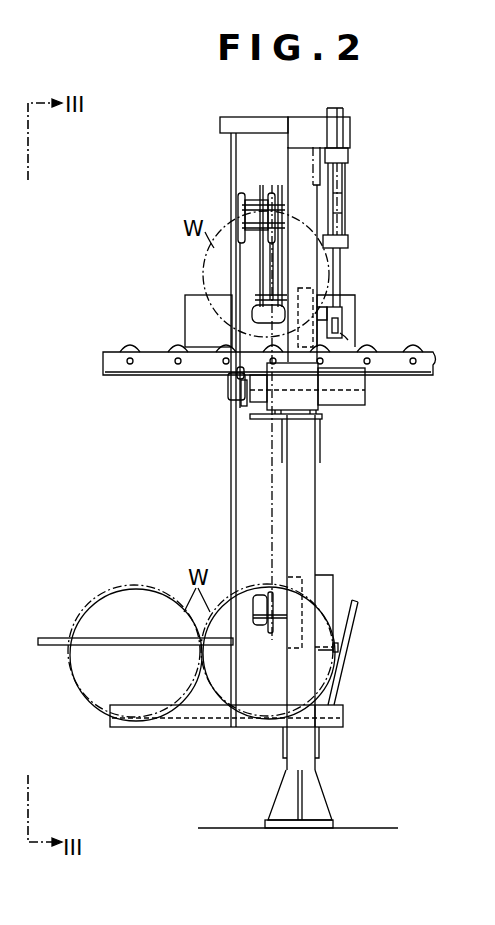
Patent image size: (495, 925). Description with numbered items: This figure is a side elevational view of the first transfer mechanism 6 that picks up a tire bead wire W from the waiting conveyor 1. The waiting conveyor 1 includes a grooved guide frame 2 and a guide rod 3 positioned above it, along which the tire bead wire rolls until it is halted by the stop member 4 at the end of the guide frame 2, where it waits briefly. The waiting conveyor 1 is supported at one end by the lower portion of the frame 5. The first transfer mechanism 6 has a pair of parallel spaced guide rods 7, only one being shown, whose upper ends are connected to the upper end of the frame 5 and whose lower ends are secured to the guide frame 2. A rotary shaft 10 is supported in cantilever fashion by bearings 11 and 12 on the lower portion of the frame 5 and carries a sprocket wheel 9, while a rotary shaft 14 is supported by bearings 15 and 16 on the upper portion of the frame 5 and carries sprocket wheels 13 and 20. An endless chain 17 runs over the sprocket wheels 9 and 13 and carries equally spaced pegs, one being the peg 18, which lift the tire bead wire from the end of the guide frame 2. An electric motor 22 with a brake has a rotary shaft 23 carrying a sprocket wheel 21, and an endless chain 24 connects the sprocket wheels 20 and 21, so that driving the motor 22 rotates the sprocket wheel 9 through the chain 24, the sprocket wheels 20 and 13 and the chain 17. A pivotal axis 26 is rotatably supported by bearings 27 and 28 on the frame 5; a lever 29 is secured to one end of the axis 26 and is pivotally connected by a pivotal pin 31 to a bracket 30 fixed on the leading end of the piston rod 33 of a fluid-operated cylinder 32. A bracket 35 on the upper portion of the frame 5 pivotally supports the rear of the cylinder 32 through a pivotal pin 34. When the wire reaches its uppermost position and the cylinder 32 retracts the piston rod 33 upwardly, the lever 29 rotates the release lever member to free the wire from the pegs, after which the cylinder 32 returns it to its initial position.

The waiting conveyor 1 is at (196, 720).
The grooved guide frame 2 is at (222, 716).
The guide rod 3 is at (58, 638).
The stop member 4 is at (338, 683).
The frame 5 is at (310, 518).
The first transfer mechanism 6 is at (224, 163).
The guide rods 7 is at (232, 138).
The sprocket wheel 9 is at (262, 595).
The rotary shaft 10 is at (275, 592).
The bearing 11 is at (305, 580).
The bearing 12 is at (330, 592).
The sprocket wheel 13 is at (266, 205).
The rotary shaft 14 is at (280, 218).
The bearing 15 is at (342, 196).
The bearing 16 is at (342, 217).
The endless chain 17 is at (270, 512).
The peg 18 is at (258, 655).
The sprocket wheel 20 is at (240, 189).
The sprocket wheel 21 is at (235, 385).
The electric motor 22 is at (335, 400).
The rotary shaft 23 is at (245, 406).
The endless chain 24 is at (240, 268).
The pivotal axis 26 is at (252, 312).
The bearing 27 is at (313, 290).
The bearing 28 is at (355, 296).
The lever 29 is at (342, 330).
The bracket 30 is at (342, 316).
The pivotal pin 31 is at (350, 330).
The fluid-operated cylinder 32 is at (345, 176).
The piston rod 33 is at (340, 262).
The pivotal pin 34 is at (350, 140).
The bracket 35 is at (336, 108).